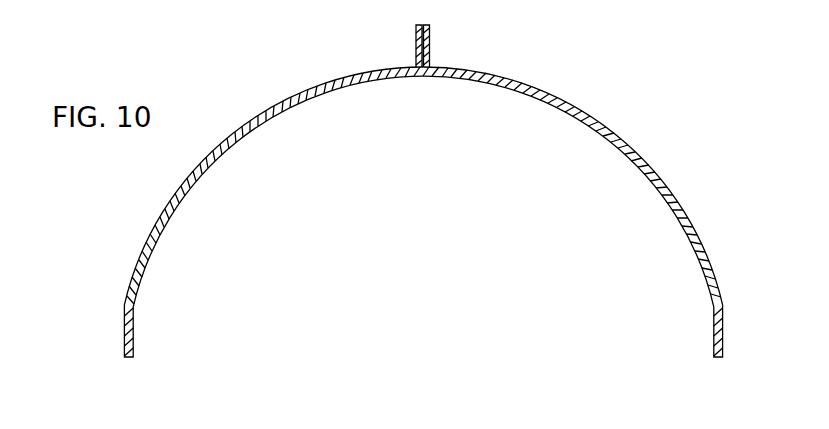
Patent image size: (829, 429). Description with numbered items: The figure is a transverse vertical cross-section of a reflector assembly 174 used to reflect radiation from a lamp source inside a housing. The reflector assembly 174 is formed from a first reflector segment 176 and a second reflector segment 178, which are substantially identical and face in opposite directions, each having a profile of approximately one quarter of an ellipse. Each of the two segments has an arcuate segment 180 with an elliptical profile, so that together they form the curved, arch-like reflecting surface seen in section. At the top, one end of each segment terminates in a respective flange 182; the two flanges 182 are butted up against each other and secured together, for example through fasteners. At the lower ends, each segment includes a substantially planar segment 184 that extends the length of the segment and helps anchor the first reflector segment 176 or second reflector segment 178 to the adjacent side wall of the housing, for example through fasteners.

The reflector assembly 174 is at (213, 110).
The first reflector segment 176 is at (173, 198).
The second reflector segment 178 is at (593, 116).
The arcuate segment 180 is at (224, 160).
The flange 182 is at (416, 34).
The planar segment 184 is at (123, 322).